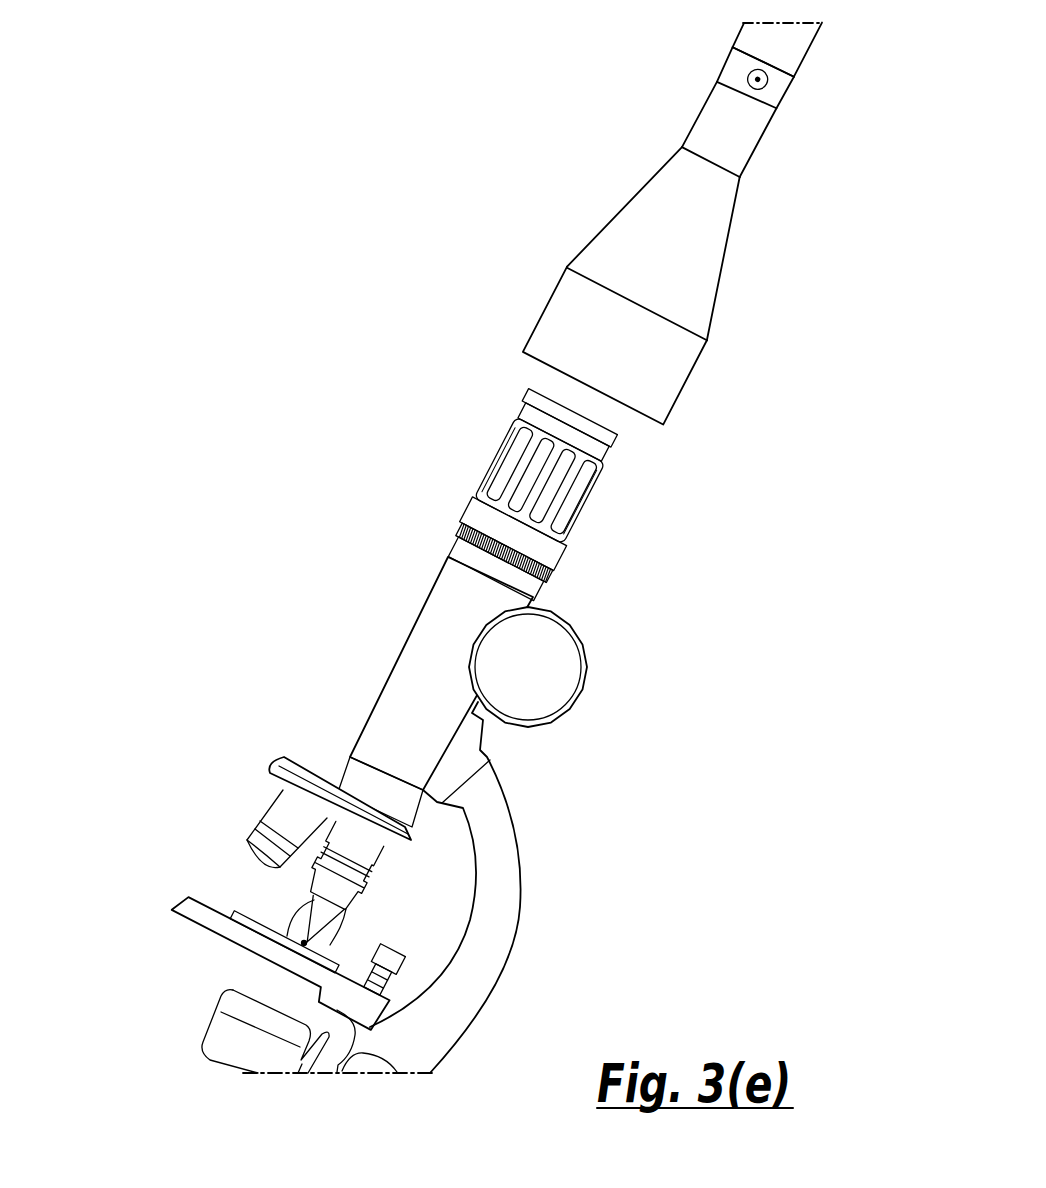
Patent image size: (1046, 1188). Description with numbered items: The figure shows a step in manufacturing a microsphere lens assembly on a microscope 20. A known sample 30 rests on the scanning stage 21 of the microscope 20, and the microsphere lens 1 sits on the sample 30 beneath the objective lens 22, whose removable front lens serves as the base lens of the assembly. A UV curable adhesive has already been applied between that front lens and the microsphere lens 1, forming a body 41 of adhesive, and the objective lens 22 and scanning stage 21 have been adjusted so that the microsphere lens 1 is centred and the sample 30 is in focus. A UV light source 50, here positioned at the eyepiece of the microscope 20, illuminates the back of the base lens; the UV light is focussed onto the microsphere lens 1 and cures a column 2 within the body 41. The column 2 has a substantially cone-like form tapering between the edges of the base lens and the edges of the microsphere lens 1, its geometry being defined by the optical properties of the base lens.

The microsphere lens 1 is at (304, 943).
The column 2 is at (314, 922).
The microscope 20 is at (492, 812).
The scanning stage 21 is at (192, 912).
The objective lens 22 is at (360, 863).
The sample 30 is at (233, 913).
The body of adhesive 41 is at (327, 930).
The UV light source 50 is at (678, 258).